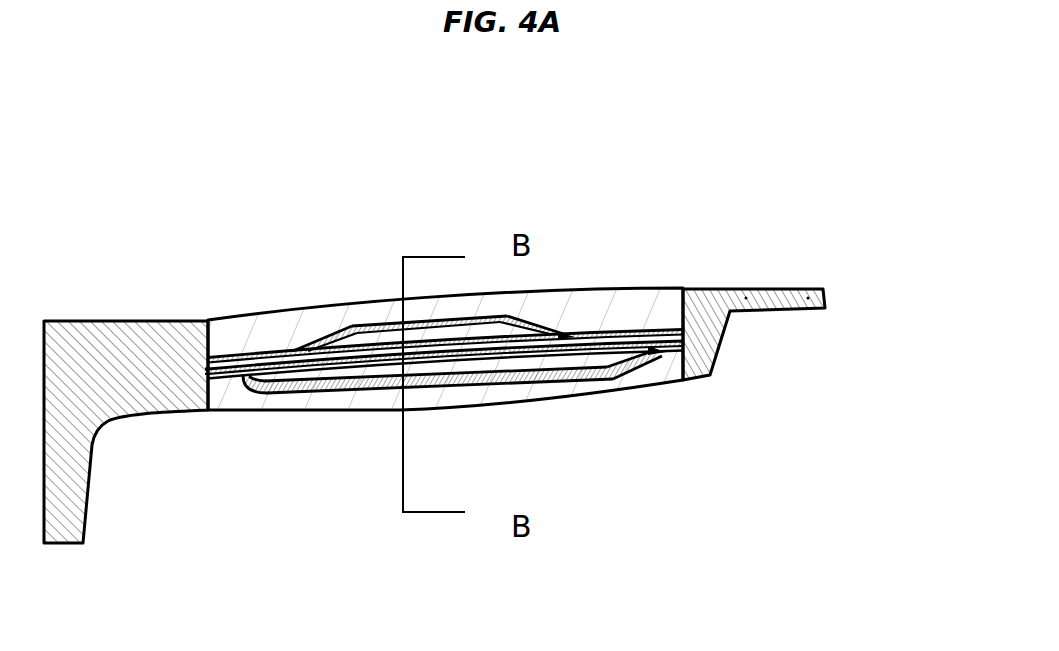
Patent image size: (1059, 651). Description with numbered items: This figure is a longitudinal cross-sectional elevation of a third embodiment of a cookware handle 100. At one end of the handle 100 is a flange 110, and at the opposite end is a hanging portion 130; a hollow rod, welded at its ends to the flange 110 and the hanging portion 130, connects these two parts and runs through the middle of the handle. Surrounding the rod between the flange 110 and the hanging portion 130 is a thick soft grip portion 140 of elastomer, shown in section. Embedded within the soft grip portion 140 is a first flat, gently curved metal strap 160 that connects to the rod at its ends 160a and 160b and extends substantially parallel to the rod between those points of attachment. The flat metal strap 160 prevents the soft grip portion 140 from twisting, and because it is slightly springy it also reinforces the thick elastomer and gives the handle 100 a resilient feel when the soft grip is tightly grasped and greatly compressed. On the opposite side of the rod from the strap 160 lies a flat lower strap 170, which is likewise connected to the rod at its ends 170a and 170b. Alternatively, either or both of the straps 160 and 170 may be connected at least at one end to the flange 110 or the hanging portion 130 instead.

The handle 100 is at (566, 122).
The flange 110 is at (127, 321).
The hanging portion 130 is at (787, 290).
The soft grip portion 140 is at (433, 308).
The flat metal strap 160 is at (440, 296).
The end of strap 160a is at (293, 348).
The end of strap 160b is at (566, 335).
The flat lower strap 170 is at (447, 378).
The end of lower strap 170a is at (248, 380).
The end of lower strap 170b is at (647, 352).